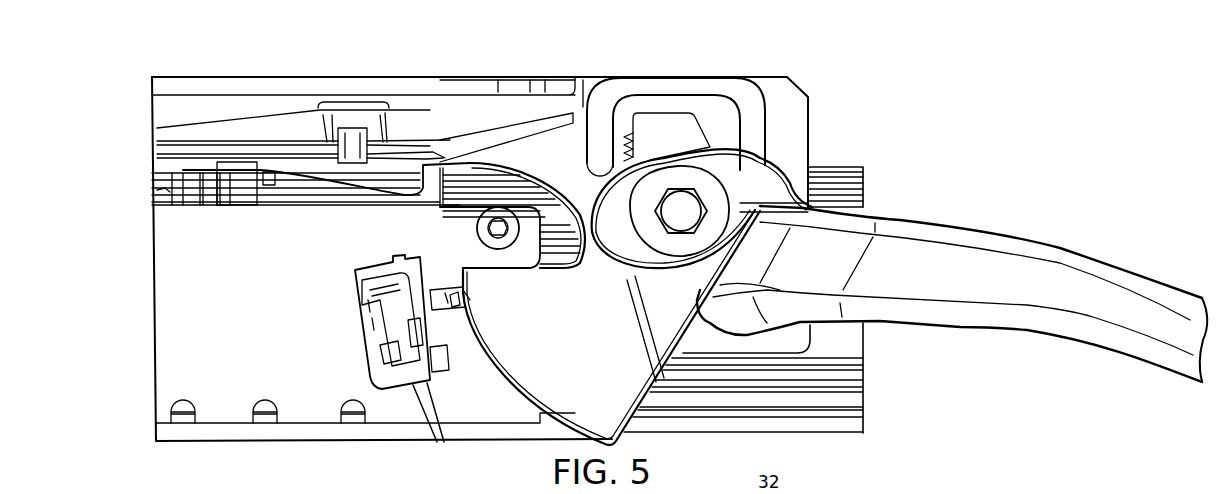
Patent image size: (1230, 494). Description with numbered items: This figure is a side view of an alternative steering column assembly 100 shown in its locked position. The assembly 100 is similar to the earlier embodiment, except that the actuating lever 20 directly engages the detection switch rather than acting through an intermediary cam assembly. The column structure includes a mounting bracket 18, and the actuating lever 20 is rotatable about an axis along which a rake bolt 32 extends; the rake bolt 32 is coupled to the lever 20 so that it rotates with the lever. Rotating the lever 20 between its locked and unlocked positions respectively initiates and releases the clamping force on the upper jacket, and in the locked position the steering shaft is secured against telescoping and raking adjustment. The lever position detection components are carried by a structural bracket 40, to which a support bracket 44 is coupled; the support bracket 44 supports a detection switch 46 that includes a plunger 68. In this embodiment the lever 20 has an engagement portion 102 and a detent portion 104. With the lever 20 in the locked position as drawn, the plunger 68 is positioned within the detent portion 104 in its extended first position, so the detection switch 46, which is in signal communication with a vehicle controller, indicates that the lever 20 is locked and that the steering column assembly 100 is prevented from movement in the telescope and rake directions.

The steering column assembly 100 is at (913, 118).
The mounting bracket 18 is at (466, 90).
The actuating lever 20 is at (1020, 245).
The rake bolt 32 is at (683, 207).
The structural bracket 40 is at (165, 385).
The support bracket 44 is at (395, 383).
The detection switch 46 is at (416, 385).
The plunger 68 is at (460, 305).
The engagement portion 102 is at (536, 394).
The detent portion 104 is at (471, 289).